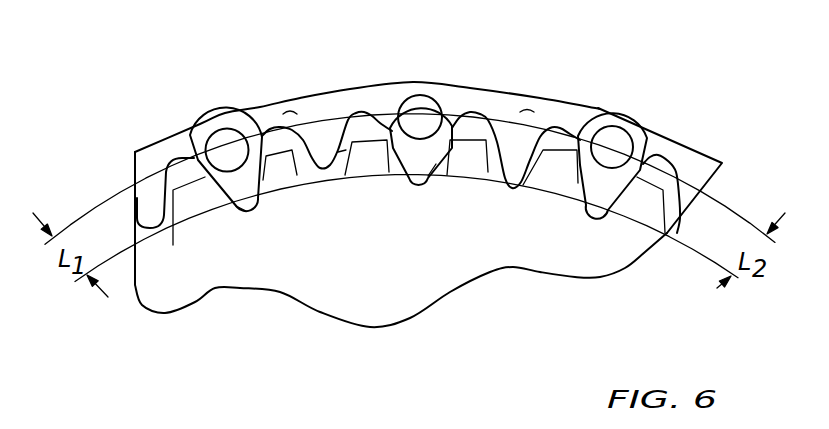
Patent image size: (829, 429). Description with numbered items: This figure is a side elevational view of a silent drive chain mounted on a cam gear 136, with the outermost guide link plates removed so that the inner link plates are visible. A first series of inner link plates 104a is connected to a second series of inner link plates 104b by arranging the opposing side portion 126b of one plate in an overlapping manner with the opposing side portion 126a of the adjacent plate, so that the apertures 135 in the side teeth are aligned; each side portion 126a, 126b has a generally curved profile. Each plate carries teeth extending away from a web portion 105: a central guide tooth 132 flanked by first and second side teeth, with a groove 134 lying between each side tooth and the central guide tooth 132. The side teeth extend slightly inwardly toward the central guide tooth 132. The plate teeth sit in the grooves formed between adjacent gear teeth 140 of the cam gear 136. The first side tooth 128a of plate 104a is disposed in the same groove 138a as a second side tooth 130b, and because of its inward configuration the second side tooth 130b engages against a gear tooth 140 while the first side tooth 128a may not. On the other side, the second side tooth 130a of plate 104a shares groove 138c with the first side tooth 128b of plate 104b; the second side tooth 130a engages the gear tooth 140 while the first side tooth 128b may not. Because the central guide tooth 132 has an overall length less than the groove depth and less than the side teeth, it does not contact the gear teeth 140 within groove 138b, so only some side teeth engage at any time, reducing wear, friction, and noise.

The first series of inner link plates 104a is at (316, 92).
The second series of inner link plates 104b is at (558, 93).
The web portion 105 is at (292, 108).
The first opposing side portion 126a is at (205, 128).
The second opposing side portion 126b is at (432, 90).
The first side tooth of inner link plate 104a 128a is at (242, 210).
The first side tooth of inner link plate 104b 128b is at (433, 160).
The second side tooth of inner link plate 104a 130a is at (391, 170).
The second side tooth of inner link plate 104b 130b is at (228, 200).
The central guide tooth 132 is at (323, 135).
The groove 134 is at (133, 185).
The aperture 135 is at (253, 135).
The cam gear 136 is at (190, 150).
The groove of cam gear 138a is at (277, 157).
The groove of cam gear 138b is at (342, 166).
The groove of cam gear 138c is at (460, 150).
The gear tooth 140 is at (214, 185).